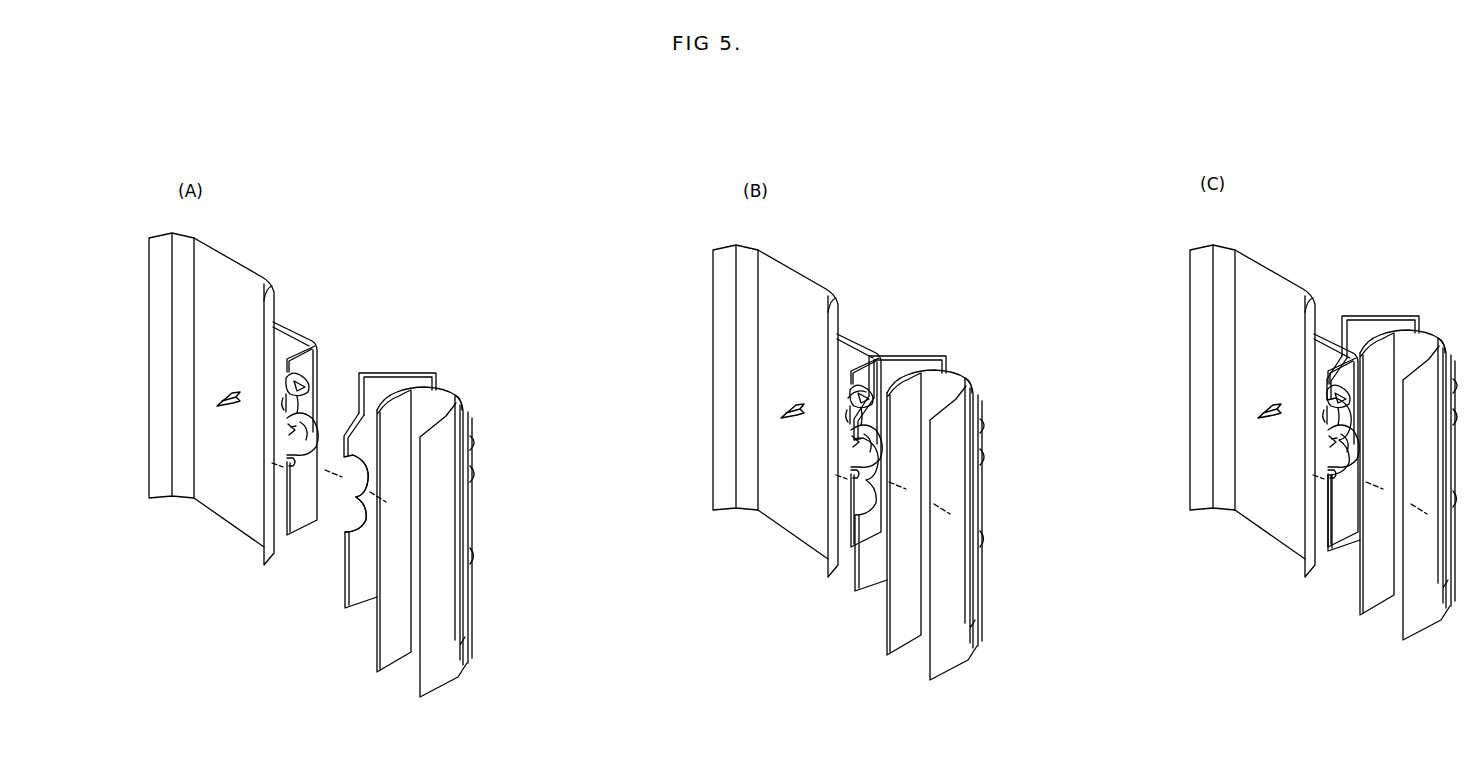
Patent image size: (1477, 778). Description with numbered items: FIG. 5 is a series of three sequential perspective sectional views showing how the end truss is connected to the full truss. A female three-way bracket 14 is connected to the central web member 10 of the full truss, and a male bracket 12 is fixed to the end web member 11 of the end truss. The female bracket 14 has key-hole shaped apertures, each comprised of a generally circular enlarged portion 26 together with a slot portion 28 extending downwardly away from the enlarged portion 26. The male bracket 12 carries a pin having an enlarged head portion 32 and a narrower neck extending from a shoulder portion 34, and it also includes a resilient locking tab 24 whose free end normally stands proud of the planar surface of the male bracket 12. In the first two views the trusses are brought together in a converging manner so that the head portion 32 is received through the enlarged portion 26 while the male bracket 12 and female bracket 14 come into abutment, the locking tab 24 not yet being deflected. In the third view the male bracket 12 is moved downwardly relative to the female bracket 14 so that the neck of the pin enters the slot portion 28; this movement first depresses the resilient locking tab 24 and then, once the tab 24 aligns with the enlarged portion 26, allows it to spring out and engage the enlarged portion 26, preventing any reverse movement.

The central web member 10 is at (455, 398).
The end web member 11 is at (232, 272).
The male bracket 12 is at (290, 332).
The female three-way bracket 14 is at (400, 383).
The resilient locking tab 24 is at (297, 390).
The enlarged portion 26 is at (353, 467).
The slot portion 28 is at (351, 519).
The head portion 32 is at (312, 433).
The shoulder portion 34 is at (290, 432).